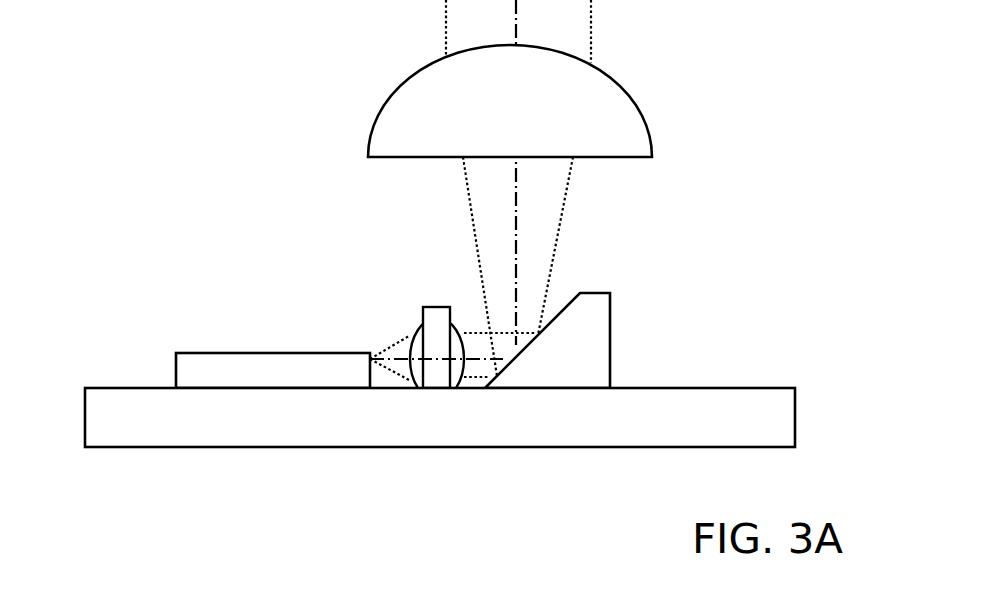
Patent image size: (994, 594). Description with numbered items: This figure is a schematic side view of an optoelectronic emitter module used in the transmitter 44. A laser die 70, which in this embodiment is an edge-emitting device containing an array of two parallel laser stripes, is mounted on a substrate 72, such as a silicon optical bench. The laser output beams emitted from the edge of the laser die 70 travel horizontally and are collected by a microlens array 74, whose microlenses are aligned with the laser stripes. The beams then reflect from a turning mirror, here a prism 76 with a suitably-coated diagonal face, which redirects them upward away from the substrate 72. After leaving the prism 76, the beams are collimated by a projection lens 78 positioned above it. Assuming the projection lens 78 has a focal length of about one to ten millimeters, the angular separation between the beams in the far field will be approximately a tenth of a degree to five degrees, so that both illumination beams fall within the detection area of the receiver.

The transmitter 44 is at (218, 148).
The laser die 70 is at (176, 364).
The substrate 72 is at (85, 426).
The microlens array 74 is at (420, 305).
The prism 76 is at (610, 340).
The projection lens 78 is at (648, 125).